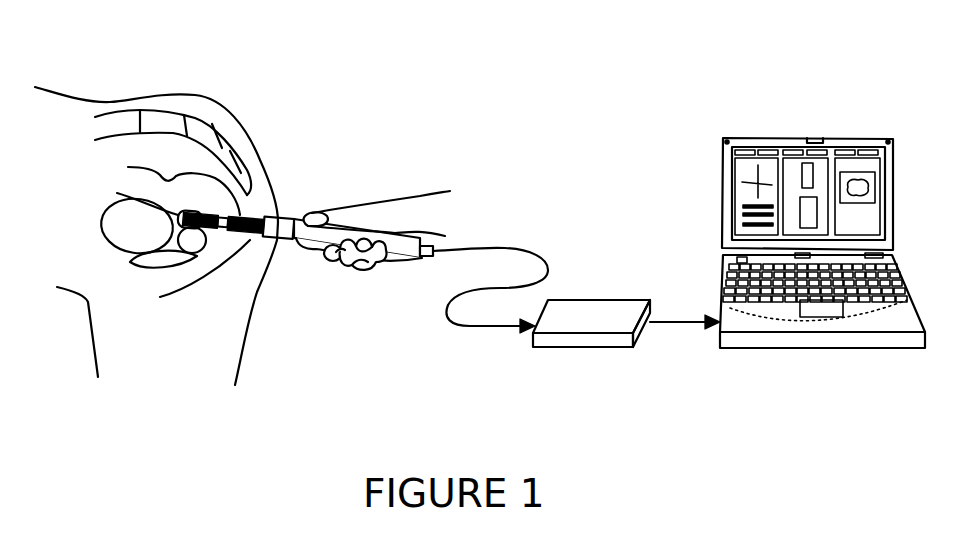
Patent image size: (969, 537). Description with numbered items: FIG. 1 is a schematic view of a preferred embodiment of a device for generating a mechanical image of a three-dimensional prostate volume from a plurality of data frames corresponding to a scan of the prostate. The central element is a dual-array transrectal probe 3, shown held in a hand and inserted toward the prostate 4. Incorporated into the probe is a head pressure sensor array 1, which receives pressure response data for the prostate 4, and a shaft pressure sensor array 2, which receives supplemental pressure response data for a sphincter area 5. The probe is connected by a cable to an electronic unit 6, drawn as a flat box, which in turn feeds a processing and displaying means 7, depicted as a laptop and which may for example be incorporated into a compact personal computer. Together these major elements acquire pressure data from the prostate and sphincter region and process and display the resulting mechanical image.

The head pressure sensor array 1 is at (193, 216).
The shaft pressure sensor array 2 is at (273, 218).
The dual-array transrectal probe 3 is at (290, 222).
The prostate 4 is at (195, 250).
The sphincter area 5 is at (248, 238).
The electronic unit 6 is at (585, 310).
The processing and displaying means 7 is at (722, 250).